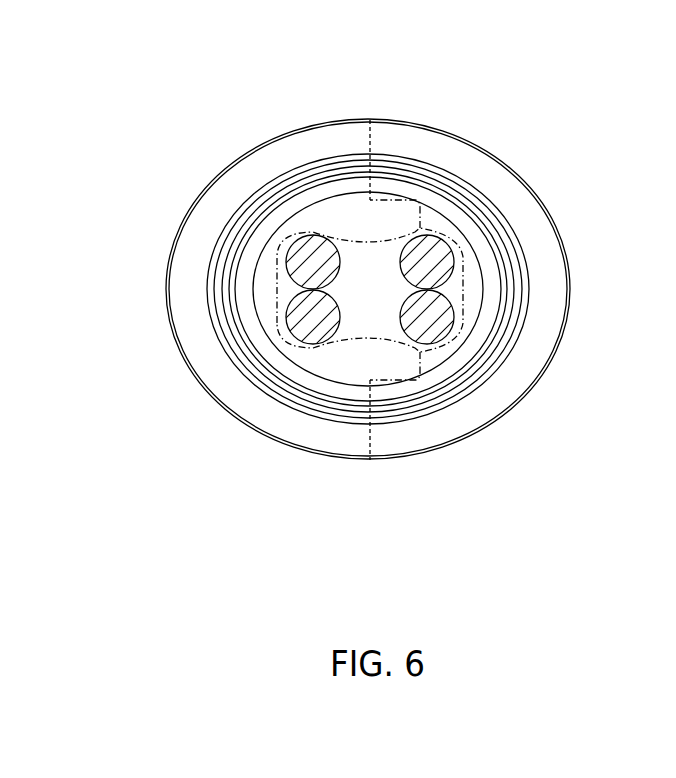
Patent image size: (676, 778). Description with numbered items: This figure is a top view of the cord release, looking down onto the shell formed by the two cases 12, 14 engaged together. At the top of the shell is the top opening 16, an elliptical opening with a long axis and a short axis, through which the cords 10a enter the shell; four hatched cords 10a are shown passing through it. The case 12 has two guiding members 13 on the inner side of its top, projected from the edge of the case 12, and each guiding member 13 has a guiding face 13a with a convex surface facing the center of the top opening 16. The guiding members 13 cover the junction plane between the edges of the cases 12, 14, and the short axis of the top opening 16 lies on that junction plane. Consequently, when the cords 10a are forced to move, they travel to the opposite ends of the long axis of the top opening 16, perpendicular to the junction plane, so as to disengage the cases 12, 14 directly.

The cords 10a is at (288, 265).
The case 12 is at (186, 273).
The guiding member 13 is at (390, 217).
The guiding face 13a is at (352, 238).
The case 14 is at (525, 213).
The top opening 16 is at (347, 333).